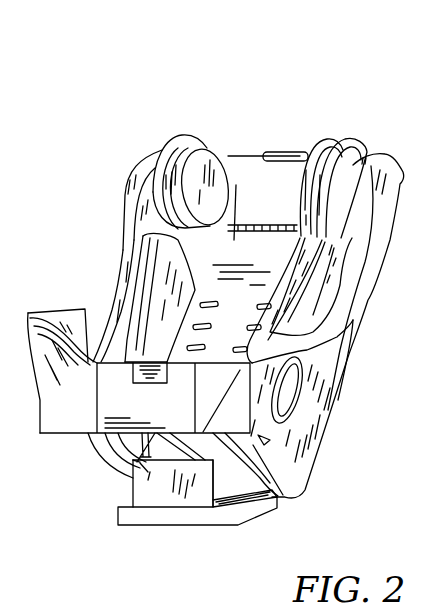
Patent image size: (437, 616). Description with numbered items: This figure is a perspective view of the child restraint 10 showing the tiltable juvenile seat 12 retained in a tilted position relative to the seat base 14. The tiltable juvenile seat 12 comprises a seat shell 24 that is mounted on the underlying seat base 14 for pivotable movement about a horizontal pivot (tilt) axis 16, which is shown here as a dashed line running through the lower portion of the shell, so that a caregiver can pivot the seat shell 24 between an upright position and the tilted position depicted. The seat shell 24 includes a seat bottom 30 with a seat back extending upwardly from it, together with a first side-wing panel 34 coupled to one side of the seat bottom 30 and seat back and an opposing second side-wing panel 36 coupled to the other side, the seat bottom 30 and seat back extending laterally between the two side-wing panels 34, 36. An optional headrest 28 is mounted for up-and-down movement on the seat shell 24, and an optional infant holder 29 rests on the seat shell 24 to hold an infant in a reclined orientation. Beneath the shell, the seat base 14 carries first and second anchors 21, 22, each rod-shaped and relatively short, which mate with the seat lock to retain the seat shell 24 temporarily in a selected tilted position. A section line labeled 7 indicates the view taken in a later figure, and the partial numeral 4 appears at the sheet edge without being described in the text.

The child restraint 10 is at (133, 107).
The seat (partial numeral) 4 is at (4, 157).
The section line 7- 7 is at (275, 125).
The tiltable juvenile seat 12 is at (337, 410).
The seat base 14 is at (117, 515).
The pivot (tilt) axis 16 is at (87, 450).
The first anchor 21 is at (135, 485).
The second anchor 22 is at (207, 473).
The seat shell 24 is at (343, 381).
The headrest 28 is at (238, 183).
The infant holder 29 is at (234, 250).
The seat bottom 30 is at (112, 340).
The first side-wing panel 34 is at (333, 326).
The second side-wing panel 36 is at (117, 273).